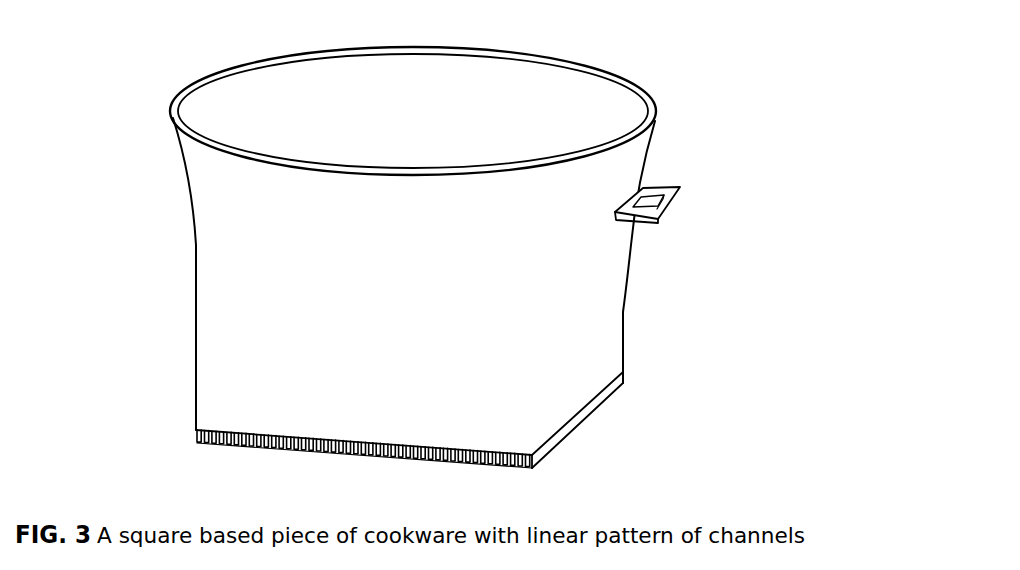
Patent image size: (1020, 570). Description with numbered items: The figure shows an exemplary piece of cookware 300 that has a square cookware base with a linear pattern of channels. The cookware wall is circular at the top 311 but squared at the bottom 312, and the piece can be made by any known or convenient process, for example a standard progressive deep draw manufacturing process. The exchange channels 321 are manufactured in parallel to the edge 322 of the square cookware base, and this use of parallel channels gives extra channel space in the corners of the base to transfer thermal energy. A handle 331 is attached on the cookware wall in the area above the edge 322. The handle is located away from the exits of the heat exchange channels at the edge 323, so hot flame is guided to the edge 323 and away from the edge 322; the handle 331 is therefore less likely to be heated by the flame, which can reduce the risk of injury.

The piece of cookware 300 is at (146, 210).
The top of cookware wall 311 is at (640, 92).
The bottom of cookware wall 312 is at (622, 372).
The exchange channels 321 is at (238, 457).
The edge of the square cookware base 322 is at (578, 415).
The edge with channel exits 323 is at (353, 443).
The handle 331 is at (680, 196).